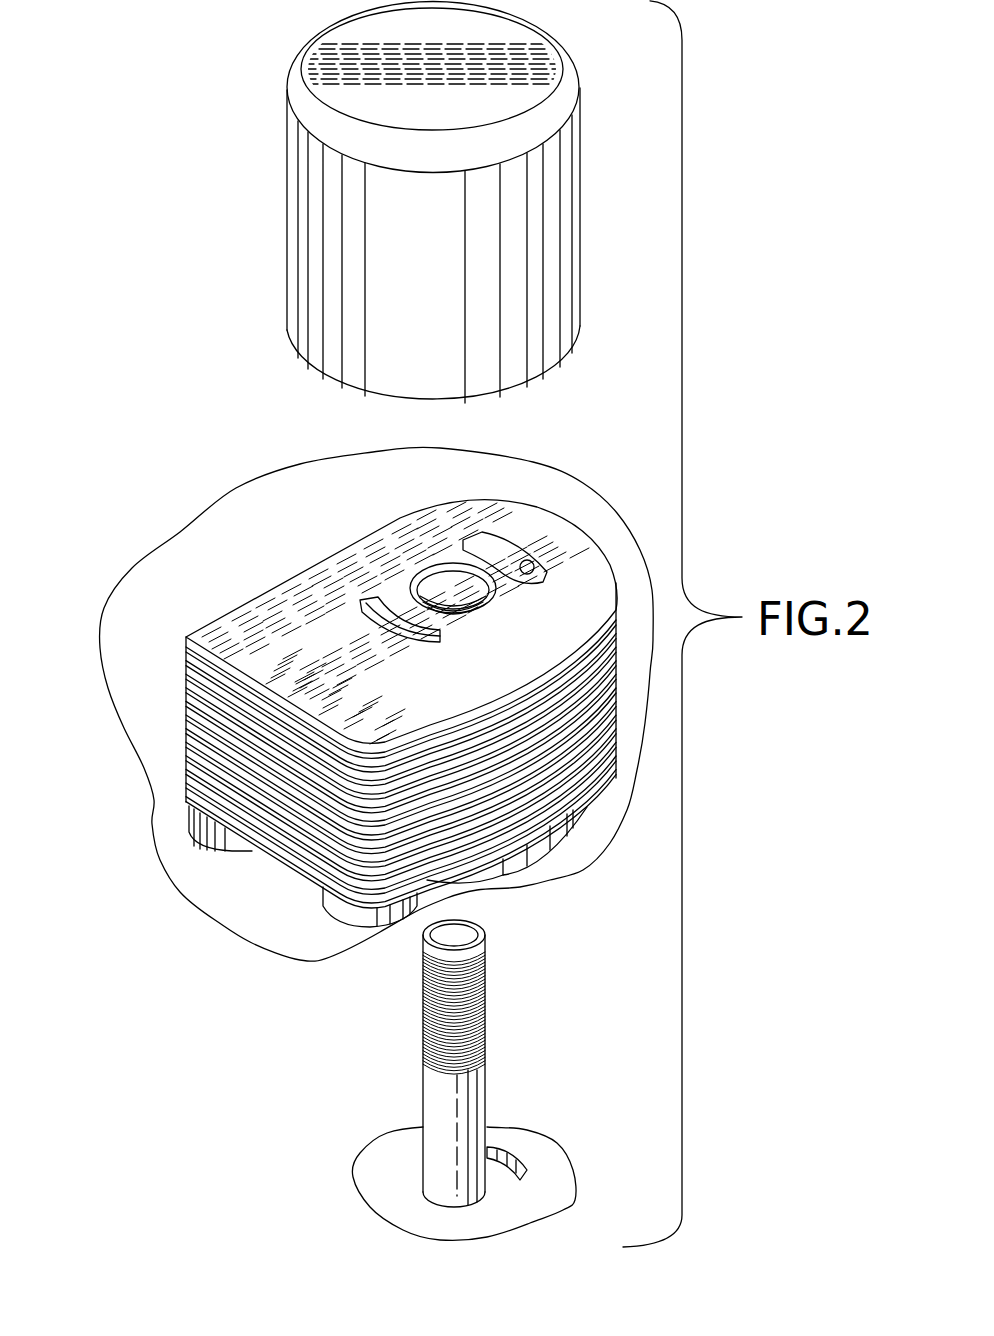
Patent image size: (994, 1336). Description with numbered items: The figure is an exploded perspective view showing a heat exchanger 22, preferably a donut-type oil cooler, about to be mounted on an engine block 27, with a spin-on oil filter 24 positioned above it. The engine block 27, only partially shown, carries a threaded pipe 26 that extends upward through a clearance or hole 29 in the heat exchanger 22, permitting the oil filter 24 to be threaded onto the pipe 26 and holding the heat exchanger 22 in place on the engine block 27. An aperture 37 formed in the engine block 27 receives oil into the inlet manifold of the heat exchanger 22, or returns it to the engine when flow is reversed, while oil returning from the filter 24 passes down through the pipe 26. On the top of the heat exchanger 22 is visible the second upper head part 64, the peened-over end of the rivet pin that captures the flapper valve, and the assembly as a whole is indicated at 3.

The heat exchanger assembly 3 is at (236, 488).
The heat exchanger 22 is at (165, 604).
The spin-on oil filter 24 is at (298, 202).
The threaded pipe 26 is at (433, 1100).
The engine block 27 is at (490, 1213).
The hole 29 is at (443, 593).
The aperture 37 is at (500, 1162).
The second upper head part 64 is at (528, 560).